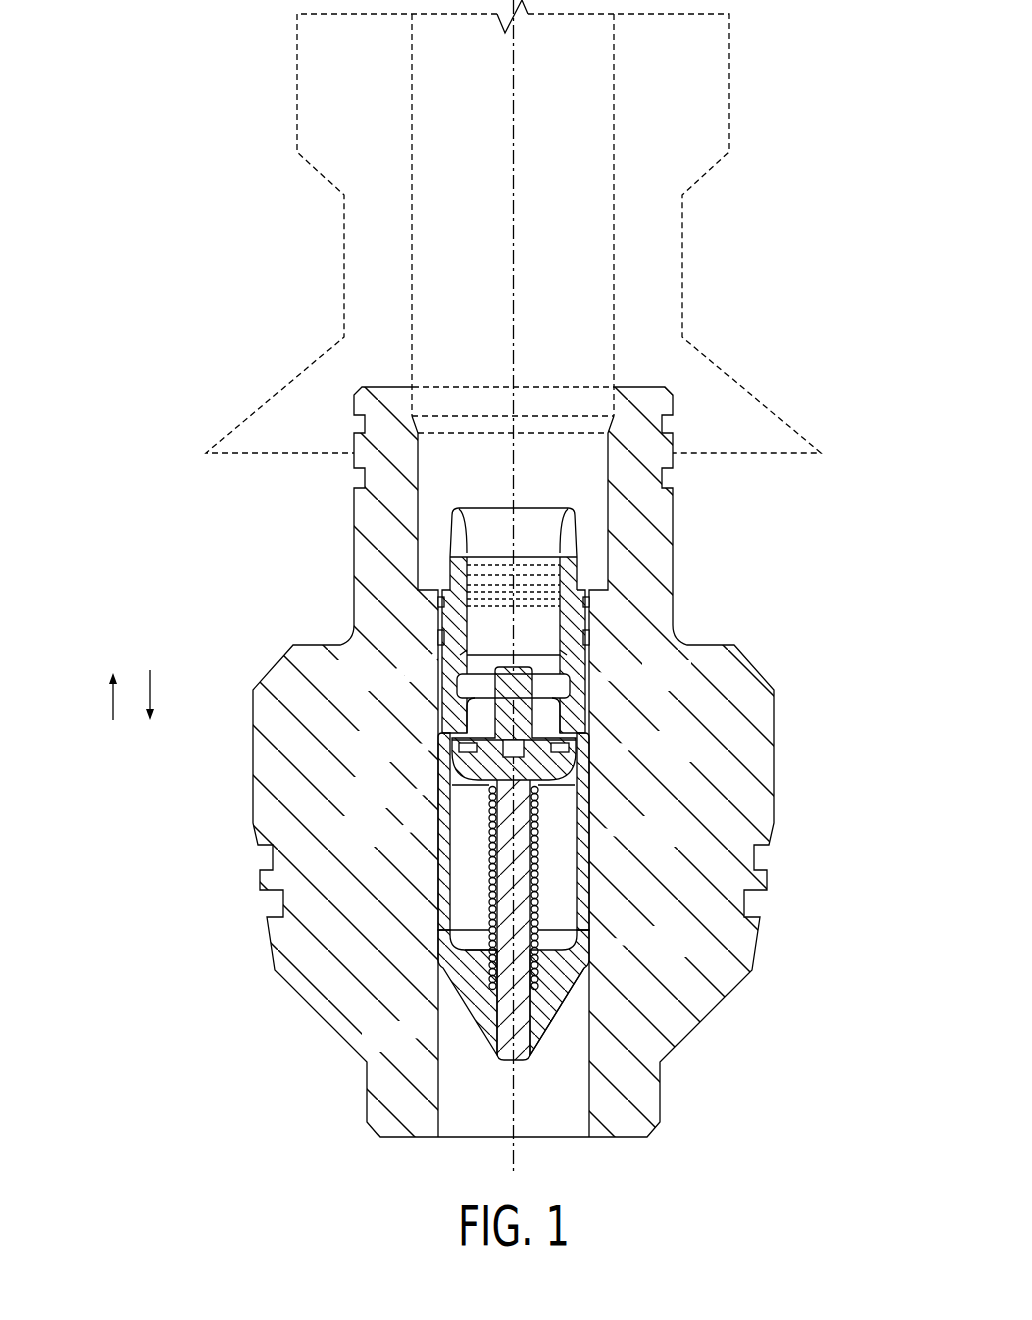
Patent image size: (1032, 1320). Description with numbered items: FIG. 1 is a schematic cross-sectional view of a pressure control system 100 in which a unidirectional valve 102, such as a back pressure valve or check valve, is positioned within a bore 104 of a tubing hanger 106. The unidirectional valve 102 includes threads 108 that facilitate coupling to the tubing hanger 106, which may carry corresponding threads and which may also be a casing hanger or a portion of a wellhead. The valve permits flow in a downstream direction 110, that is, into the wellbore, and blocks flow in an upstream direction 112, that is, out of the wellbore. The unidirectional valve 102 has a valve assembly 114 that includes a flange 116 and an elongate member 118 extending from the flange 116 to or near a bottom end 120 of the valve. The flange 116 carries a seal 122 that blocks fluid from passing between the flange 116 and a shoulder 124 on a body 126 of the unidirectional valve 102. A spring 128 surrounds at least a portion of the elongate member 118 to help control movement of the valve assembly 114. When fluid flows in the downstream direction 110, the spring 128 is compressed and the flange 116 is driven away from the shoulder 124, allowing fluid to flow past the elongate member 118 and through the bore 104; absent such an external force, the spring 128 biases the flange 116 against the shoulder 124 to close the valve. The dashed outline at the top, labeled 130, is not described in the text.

The pressure control system 100 is at (870, 420).
The unidirectional valve 102 is at (443, 532).
The bore 104 is at (590, 828).
The tubing hanger 106 is at (775, 722).
The threads 108 is at (440, 672).
The downstream direction 110 is at (150, 688).
The upstream direction 112 is at (113, 707).
The valve assembly 114 is at (483, 800).
The flange 116 is at (488, 783).
The elongate member 118 is at (505, 1015).
The bottom end 120 is at (494, 1059).
The seal 122 is at (570, 748).
The shoulder 124 is at (458, 750).
The body 126 is at (549, 1037).
The spring 128 is at (581, 937).
The hose 130 is at (757, 58).